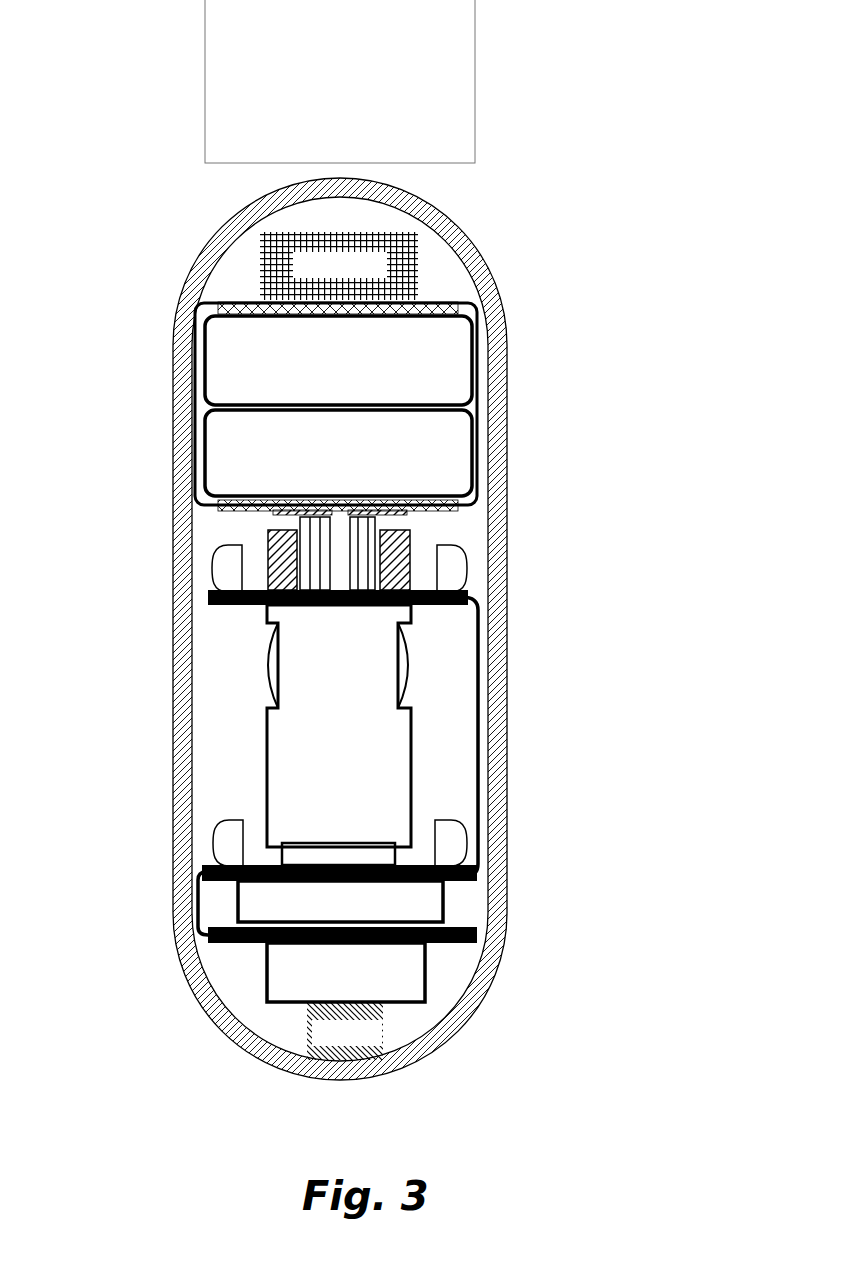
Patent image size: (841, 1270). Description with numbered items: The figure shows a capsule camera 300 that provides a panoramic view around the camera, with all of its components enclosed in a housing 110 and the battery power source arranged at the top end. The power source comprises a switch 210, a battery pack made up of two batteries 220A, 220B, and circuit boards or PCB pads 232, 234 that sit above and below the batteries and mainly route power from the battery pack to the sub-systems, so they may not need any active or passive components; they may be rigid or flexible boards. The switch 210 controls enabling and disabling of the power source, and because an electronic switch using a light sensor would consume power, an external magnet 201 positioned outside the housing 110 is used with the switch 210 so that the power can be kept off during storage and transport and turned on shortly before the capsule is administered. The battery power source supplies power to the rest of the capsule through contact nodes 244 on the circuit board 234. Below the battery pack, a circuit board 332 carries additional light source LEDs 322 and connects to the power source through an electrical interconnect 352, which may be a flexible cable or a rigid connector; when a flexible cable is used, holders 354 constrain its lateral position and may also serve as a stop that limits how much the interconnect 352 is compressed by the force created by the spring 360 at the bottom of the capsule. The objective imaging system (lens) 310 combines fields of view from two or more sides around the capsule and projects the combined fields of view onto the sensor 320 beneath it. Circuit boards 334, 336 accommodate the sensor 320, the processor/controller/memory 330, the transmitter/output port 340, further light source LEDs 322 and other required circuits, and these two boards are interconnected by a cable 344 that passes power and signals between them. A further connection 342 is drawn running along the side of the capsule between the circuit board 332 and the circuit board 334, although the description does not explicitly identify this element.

The external magnet 201 is at (475, 65).
The capsule camera 300 is at (602, 186).
The housing 110 is at (437, 218).
The switch 210 is at (440, 267).
The circuit board 232 is at (457, 308).
The battery 220A is at (472, 365).
The battery 220B is at (473, 453).
The circuit board 234 is at (457, 503).
The contact nodes 244 is at (263, 520).
The electrical interconnect 352 is at (300, 523).
The holders 354 is at (410, 537).
The light source (LEDs) 322 is at (215, 568).
The circuit board 332 is at (475, 598).
The flexible connector 342 is at (480, 662).
The objective imaging system (lens) 310 is at (413, 733).
The sensor 320 is at (395, 855).
The circuit board 334 is at (478, 877).
The processor/controller/memory 330 is at (442, 900).
The cable 344 is at (197, 900).
The circuit board 336 is at (478, 937).
The transmitter/output port 340 is at (425, 970).
The spring 360 is at (383, 1040).